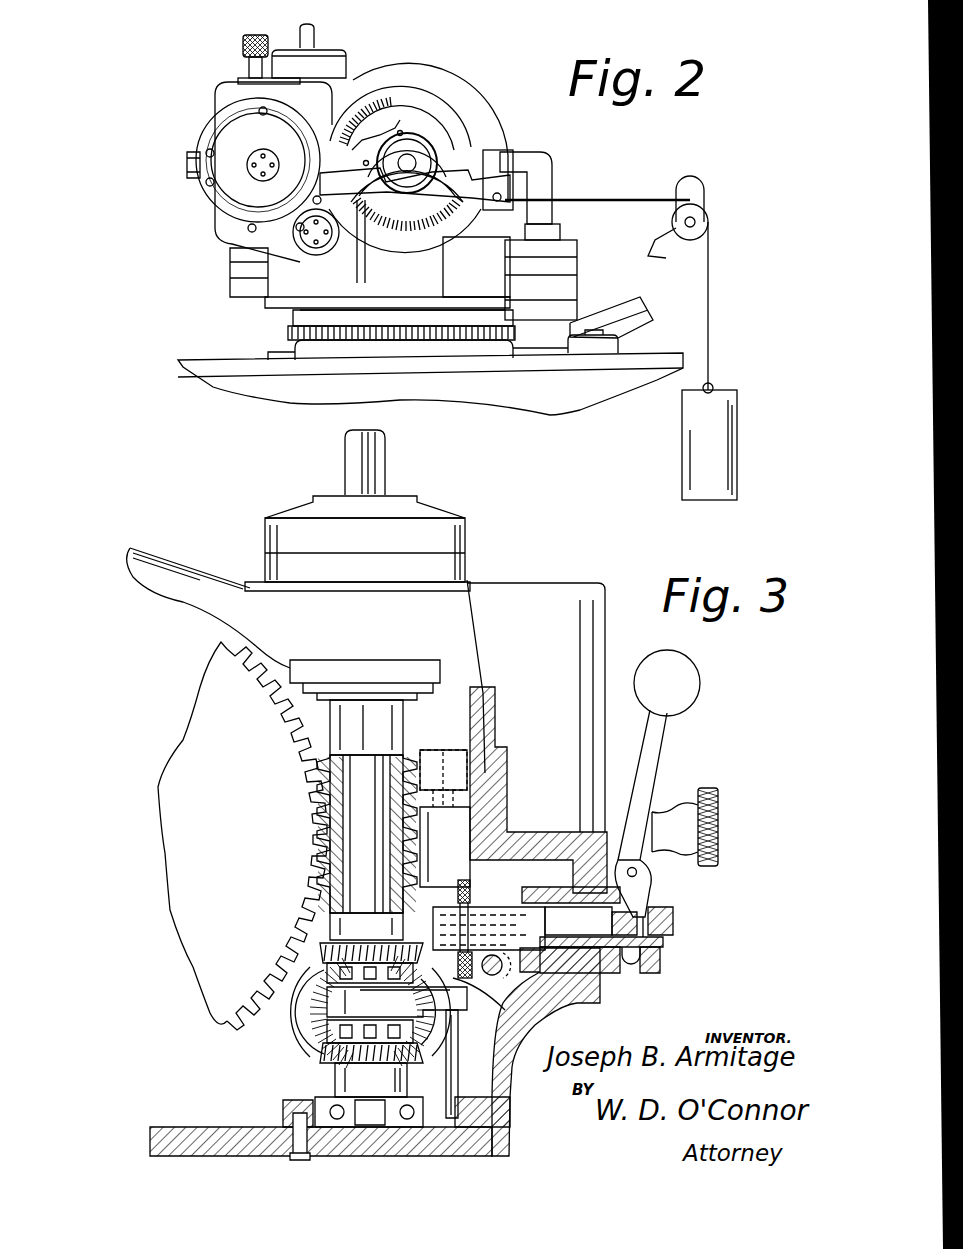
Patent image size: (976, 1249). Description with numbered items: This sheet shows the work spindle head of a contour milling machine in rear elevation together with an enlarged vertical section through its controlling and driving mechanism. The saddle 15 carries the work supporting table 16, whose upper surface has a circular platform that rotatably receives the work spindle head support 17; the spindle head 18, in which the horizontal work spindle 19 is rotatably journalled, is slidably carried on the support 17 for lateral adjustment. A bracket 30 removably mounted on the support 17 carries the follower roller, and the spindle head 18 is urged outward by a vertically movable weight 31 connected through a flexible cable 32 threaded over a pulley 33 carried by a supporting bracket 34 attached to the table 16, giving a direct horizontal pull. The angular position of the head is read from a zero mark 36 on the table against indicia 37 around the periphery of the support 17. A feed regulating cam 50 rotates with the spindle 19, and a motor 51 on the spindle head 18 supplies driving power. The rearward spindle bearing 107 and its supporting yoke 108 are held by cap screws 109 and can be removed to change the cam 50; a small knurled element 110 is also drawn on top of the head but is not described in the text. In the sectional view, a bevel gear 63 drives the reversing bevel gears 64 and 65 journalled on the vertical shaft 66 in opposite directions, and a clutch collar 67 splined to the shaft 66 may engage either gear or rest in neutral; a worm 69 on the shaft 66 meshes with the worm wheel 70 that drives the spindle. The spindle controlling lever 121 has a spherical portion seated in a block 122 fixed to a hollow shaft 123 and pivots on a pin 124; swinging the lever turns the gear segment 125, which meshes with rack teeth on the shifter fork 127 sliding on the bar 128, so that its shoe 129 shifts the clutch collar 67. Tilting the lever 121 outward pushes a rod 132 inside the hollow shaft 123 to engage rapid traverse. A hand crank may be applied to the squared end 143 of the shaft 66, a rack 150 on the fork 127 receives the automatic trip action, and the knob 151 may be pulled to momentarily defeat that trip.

In FIG. 2, the saddle 15 is at (220, 388).
In FIG. 2, the work supporting table 16 is at (283, 355).
In FIG. 2, the work spindle head support 17 is at (568, 248).
In FIG. 3, the spindle head 18 is at (430, 628).
In FIG. 2, the work spindle 19 is at (408, 177).
In FIG. 2, the bracket 30 is at (537, 163).
In FIG. 2, the weight 31 is at (688, 425).
In FIG. 2, the flexible cable 32 is at (712, 283).
In FIG. 2, the pulley 33 is at (708, 224).
In FIG. 2, the supporting bracket 34 is at (648, 318).
In FIG. 2, the zero mark 36 is at (412, 337).
In FIG. 2, the indicia 37 is at (367, 335).
In FIG. 2, the feed regulating cam 50 is at (410, 130).
In FIG. 2, the motor 51 is at (247, 138).
In FIG. 3, the bevel gear 63 is at (333, 1027).
In FIG. 3, the bevel gear 64 is at (327, 1048).
In FIG. 3, the bevel gear 65 is at (347, 943).
In FIG. 3, the shaft 66 is at (358, 828).
In FIG. 3, the clutch collar 67 is at (327, 983).
In FIG. 3, the worm 69 is at (425, 765).
In FIG. 3, the worm wheel 70 is at (196, 706).
In FIG. 2, the rearward spindle bearing 107 is at (420, 157).
In FIG. 2, the supporting yoke 108 is at (460, 215).
In FIG. 2, the cap screws 109 is at (313, 200).
In FIG. 2, the knob 110 is at (243, 43).
In FIG. 3, the spindle controlling lever 121 is at (683, 673).
In FIG. 3, the block 122 is at (660, 968).
In FIG. 3, the hollow shaft 123 is at (664, 945).
In FIG. 3, the pin 124 is at (637, 873).
In FIG. 3, the gear segment 125 is at (462, 950).
In FIG. 3, the shifter fork 127 is at (450, 827).
In FIG. 3, the bar 128 is at (450, 1052).
In FIG. 3, the shoe 129 is at (357, 1002).
In FIG. 3, the rod 132 is at (675, 918).
In FIG. 2, the squared end 143 is at (316, 38).
In FIG. 3, the squared end 143 is at (373, 465).
In FIG. 3, the rack 150 is at (472, 888).
In FIG. 2, the knob 151 is at (187, 164).
In FIG. 3, the knob 151 is at (717, 793).